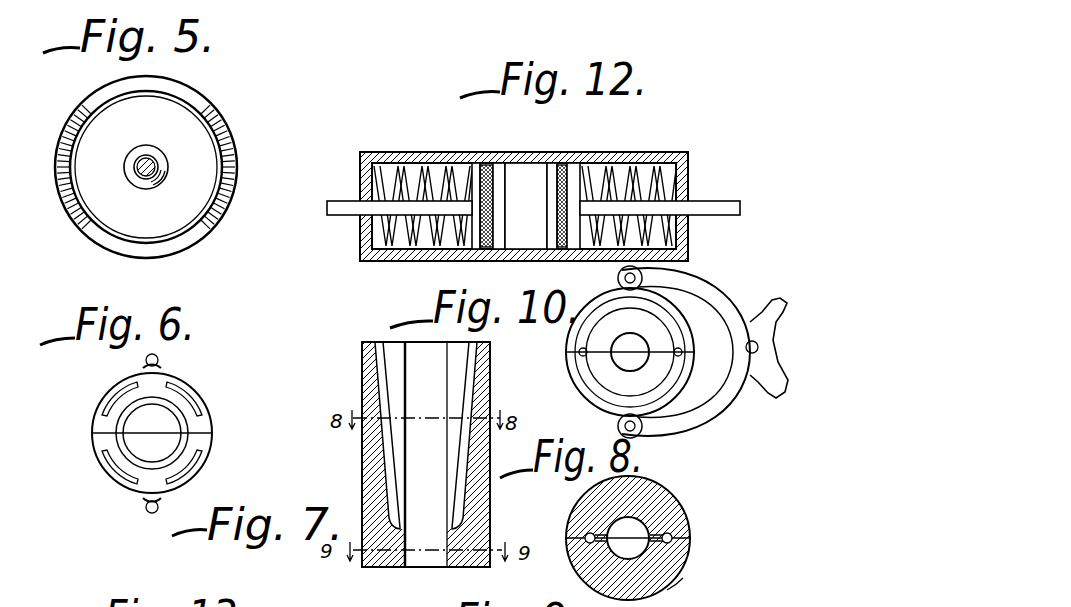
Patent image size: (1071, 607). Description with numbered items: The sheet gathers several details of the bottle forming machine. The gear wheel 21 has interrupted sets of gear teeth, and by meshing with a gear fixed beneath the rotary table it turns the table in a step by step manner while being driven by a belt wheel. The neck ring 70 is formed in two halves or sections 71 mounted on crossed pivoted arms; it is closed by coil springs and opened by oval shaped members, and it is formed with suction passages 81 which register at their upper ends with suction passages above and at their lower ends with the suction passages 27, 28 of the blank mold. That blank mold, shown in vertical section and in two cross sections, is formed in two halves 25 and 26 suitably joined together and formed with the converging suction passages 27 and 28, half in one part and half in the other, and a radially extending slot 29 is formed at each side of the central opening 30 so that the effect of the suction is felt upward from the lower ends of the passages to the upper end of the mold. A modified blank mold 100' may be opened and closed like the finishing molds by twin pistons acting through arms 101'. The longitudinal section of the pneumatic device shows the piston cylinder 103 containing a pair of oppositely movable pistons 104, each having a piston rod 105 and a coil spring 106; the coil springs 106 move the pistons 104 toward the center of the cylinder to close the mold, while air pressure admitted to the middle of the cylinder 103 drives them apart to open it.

In FIG. 5, the gear wheel 21 is at (178, 238).
In FIG. 7, the gear wheel 21 is at (452, 376).
In FIG. 8, the blank mold half 25 is at (688, 510).
In FIG. 8, the blank mold half 26 is at (677, 582).
In FIG. 7, the suction passage 27 is at (465, 397).
In FIG. 8, the suction passage 27 is at (690, 540).
In FIG. 7, the suction passage 28 is at (380, 397).
In FIG. 8, the suction passage 28 is at (586, 533).
In FIG. 8, the radially extending slot 29 is at (663, 524).
In FIG. 8, the central opening 30 is at (627, 540).
In FIG. 6, the neck ring 70 is at (183, 380).
In FIG. 6, the neck ring section 71 is at (100, 422).
In FIG. 6, the suction passage 81 is at (195, 453).
In FIG. 10, the blank mold 100' is at (653, 352).
In FIG. 10, the arm 101' is at (703, 355).
In FIG. 12, the piston cylinder 103 is at (550, 187).
In FIG. 12, the piston 104 is at (493, 173).
In FIG. 12, the piston rod 105 is at (347, 183).
In FIG. 12, the coil spring 106 is at (430, 175).